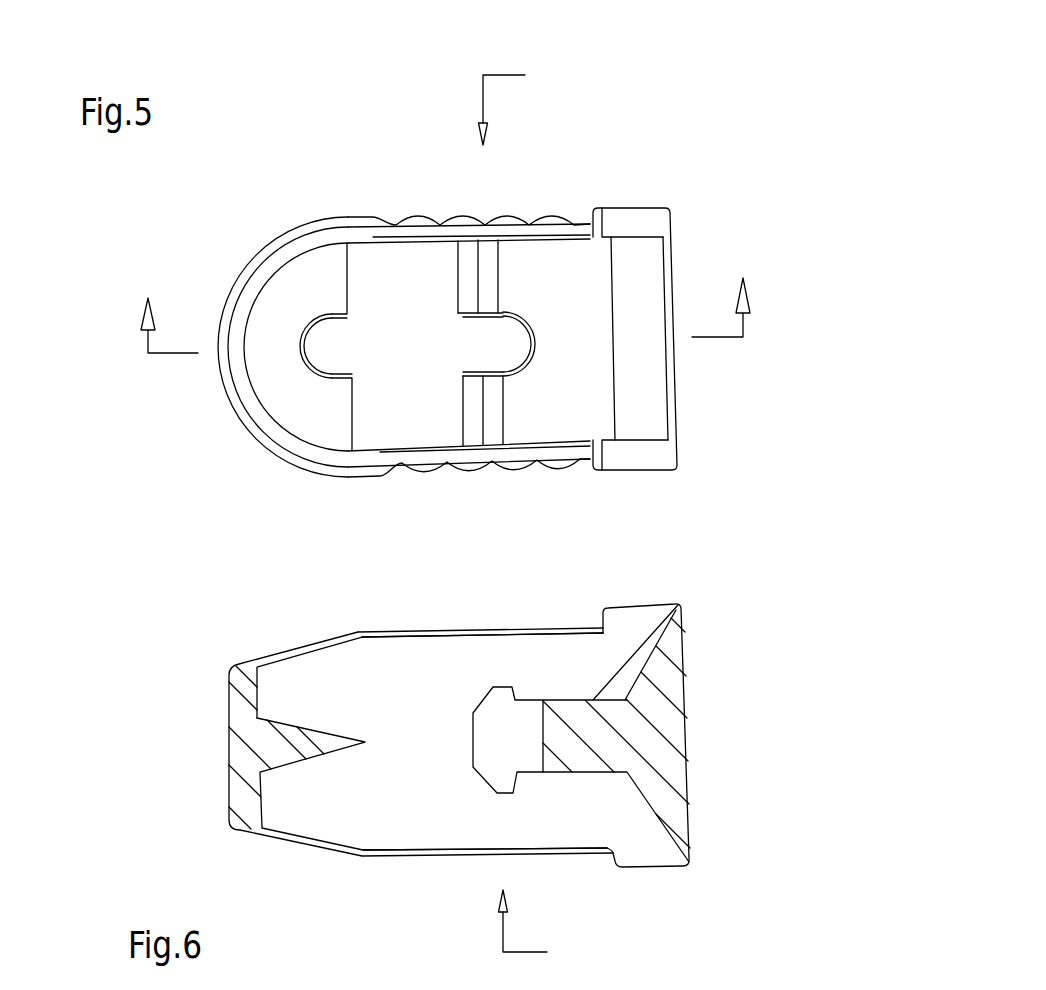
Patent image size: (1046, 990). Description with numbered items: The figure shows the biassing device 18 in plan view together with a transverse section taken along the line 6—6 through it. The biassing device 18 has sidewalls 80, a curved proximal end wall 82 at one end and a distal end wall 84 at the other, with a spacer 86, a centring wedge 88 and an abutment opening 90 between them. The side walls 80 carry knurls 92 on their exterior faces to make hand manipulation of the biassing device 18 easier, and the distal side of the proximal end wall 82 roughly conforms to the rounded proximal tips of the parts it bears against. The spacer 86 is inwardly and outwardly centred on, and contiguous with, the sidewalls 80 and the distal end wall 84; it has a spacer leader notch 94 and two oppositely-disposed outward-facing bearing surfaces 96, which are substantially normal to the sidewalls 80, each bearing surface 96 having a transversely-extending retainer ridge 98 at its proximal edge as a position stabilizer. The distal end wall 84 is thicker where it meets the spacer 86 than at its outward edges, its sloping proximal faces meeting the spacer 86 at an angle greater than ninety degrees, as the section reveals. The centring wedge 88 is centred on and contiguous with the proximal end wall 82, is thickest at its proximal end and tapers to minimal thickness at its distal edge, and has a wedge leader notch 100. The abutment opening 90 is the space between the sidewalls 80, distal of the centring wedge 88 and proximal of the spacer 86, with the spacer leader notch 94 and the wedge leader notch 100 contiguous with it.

In FIG. 5, the biassing device 18 is at (519, 103).
In FIG. 6, the biassing device 18 is at (539, 929).
In FIG. 5, the section line 6— 6 is at (443, 291).
In FIG. 5, the sidewalls 80 is at (373, 215).
In FIG. 6, the sidewalls 80 is at (382, 668).
In FIG. 5, the proximal end wall 82 is at (232, 353).
In FIG. 6, the proximal end wall 82 is at (240, 797).
In FIG. 5, the distal end wall 84 is at (643, 310).
In FIG. 6, the distal end wall 84 is at (670, 663).
In FIG. 5, the spacer 86 is at (572, 400).
In FIG. 6, the spacer 86 is at (580, 735).
In FIG. 5, the centring wedge 88 is at (267, 375).
In FIG. 6, the centring wedge 88 is at (282, 743).
In FIG. 5, the abutment opening 90 is at (405, 388).
In FIG. 6, the abutment opening 90 is at (420, 710).
In FIG. 5, the knurls 92 is at (553, 212).
In FIG. 5, the spacer leader notch 94 is at (502, 343).
In FIG. 6, the spacer leader notch 94 is at (520, 735).
In FIG. 5, the bearing surfaces 96 is at (570, 307).
In FIG. 6, the bearing surfaces 96 is at (680, 604).
In FIG. 5, the retainer ridge 98 is at (493, 417).
In FIG. 6, the retainer ridge 98 is at (500, 693).
In FIG. 5, the wedge leader notch 100 is at (327, 348).
In FIG. 6, the wedge leader notch 100 is at (330, 743).